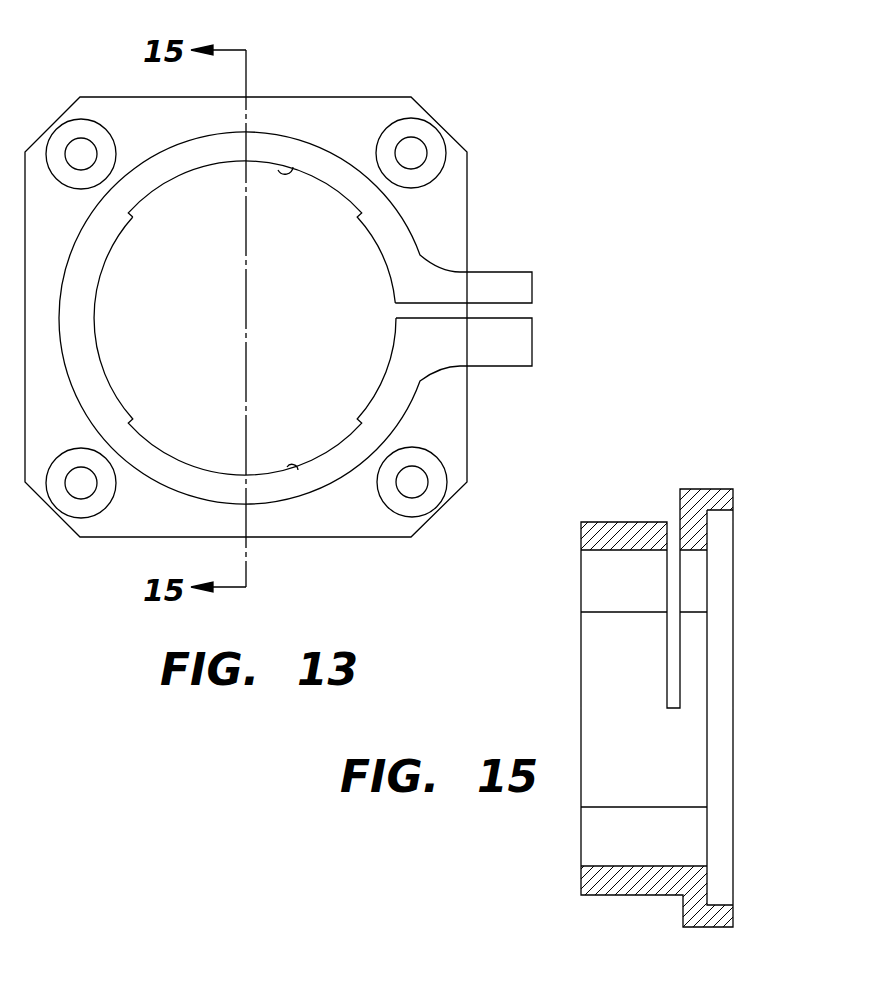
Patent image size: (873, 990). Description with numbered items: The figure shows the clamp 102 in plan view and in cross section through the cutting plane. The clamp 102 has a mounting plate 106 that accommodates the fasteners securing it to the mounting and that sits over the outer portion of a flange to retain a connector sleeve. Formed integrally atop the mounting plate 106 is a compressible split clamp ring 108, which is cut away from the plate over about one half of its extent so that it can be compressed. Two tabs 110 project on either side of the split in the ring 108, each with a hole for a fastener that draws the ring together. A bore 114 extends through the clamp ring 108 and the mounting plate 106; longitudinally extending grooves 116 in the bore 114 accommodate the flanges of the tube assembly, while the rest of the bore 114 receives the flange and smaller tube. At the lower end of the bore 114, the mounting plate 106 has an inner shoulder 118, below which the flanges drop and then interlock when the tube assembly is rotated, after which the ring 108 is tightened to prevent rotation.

In FIG. 13, the clamp 102 is at (367, 98).
In FIG. 15, the clamp 102 is at (710, 488).
In FIG. 13, the mounting plate 106 is at (275, 118).
In FIG. 13, the compressible split clamp ring 108 is at (275, 492).
In FIG. 15, the compressible split clamp ring 108 is at (580, 879).
In FIG. 13, the tabs 110 is at (498, 268).
In FIG. 13, the bore 114 is at (97, 297).
In FIG. 15, the bore 114 is at (603, 700).
In FIG. 13, the longitudinally extending grooves 116 is at (293, 167).
In FIG. 15, the longitudinally extending grooves 116 is at (613, 867).
In FIG. 15, the inner shoulder 118 is at (708, 537).